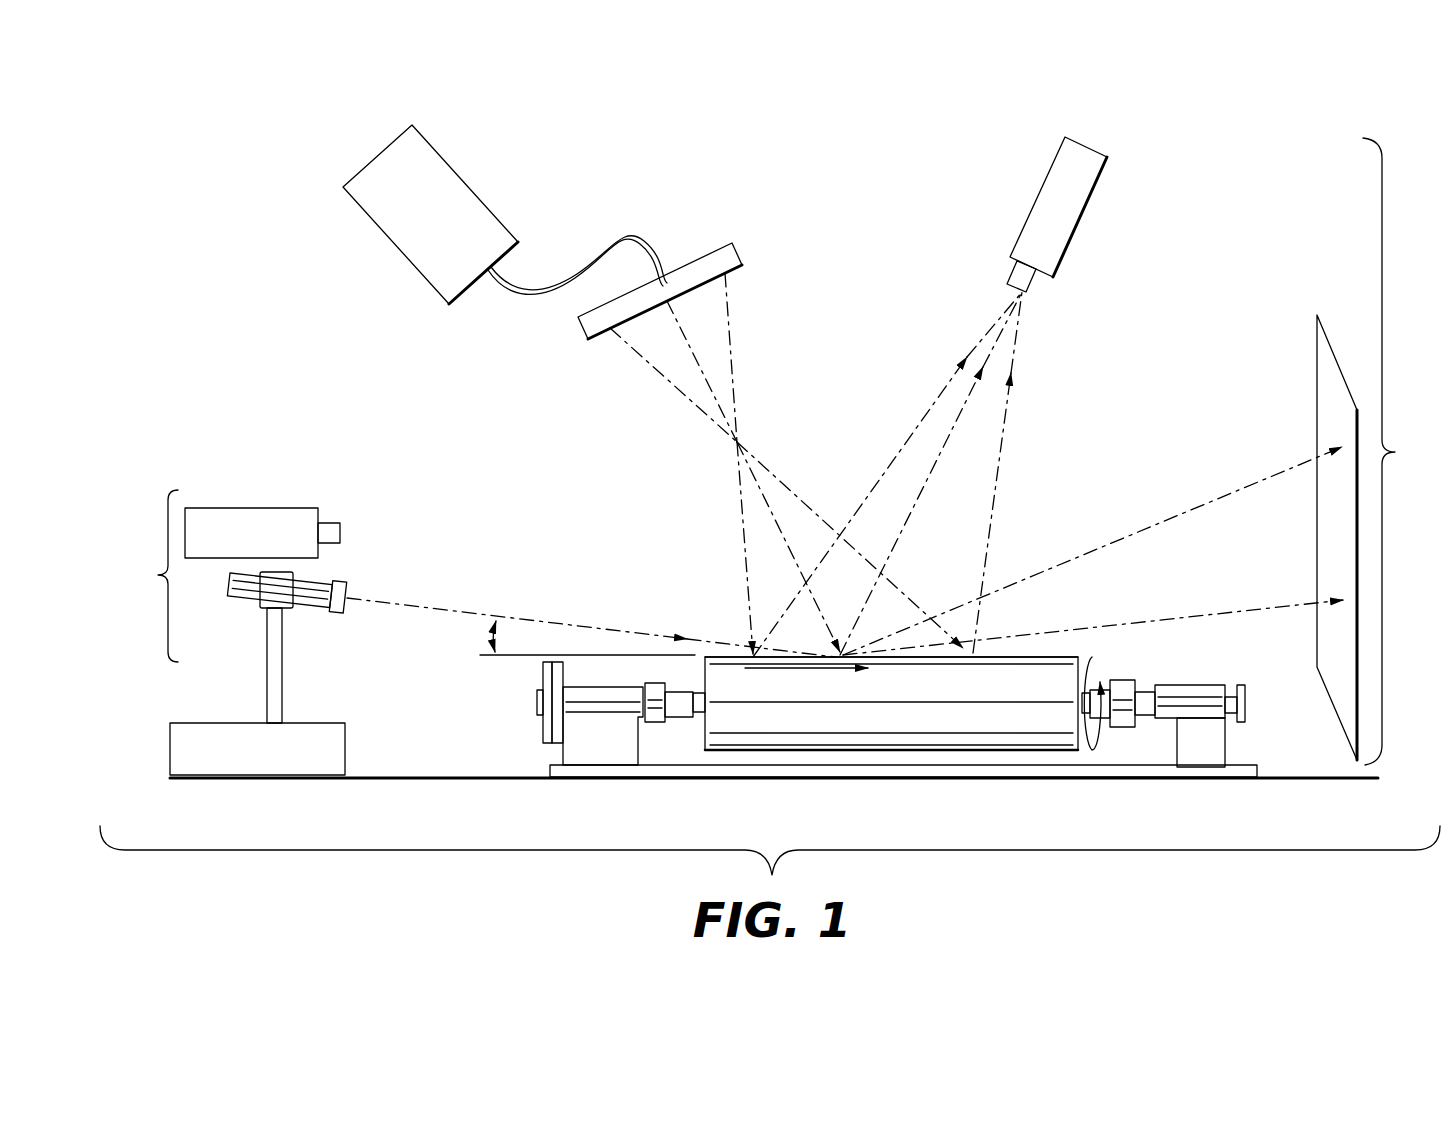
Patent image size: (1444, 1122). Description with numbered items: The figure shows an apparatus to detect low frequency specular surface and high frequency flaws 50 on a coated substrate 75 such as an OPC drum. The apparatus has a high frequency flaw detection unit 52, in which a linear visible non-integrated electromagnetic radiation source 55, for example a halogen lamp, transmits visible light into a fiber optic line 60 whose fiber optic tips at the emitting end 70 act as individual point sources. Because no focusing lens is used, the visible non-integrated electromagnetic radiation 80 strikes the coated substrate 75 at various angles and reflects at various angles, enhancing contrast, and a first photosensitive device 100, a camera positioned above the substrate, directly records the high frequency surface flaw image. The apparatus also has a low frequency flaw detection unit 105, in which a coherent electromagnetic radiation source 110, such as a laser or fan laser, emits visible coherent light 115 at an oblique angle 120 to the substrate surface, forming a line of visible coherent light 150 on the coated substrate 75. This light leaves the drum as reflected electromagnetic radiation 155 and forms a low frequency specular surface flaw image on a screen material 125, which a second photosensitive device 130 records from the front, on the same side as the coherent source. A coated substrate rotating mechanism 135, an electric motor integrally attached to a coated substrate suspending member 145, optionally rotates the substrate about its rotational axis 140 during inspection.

The apparatus to detect low frequency specular surface and high frequency flaws 50 is at (1432, 466).
The high frequency flaw detection unit 52 is at (818, 104).
The linear visible non-integrated electromagnetic radiation source 55 is at (445, 226).
The fiber optic line 60 is at (547, 288).
The emitting end 70 is at (587, 331).
The coated substrate 75 is at (982, 723).
The visible non-integrated electromagnetic radiation 80 is at (686, 427).
The first photosensitive device 100 is at (1070, 230).
The low frequency flaw detection unit 105 is at (148, 588).
The coherent electromagnetic radiation source 110 is at (232, 575).
The visible coherent light 115 is at (435, 606).
The oblique angle 120 is at (587, 638).
The screen material 125 is at (1315, 395).
The second photosensitive device 130 is at (252, 506).
The coated substrate rotating mechanism 135 is at (592, 745).
The rotational axis 140 is at (806, 686).
The coated substrate suspending member 145 is at (683, 707).
The line of visible coherent light 150 is at (1022, 650).
The reflected electromagnetic radiation 155 is at (1248, 487).